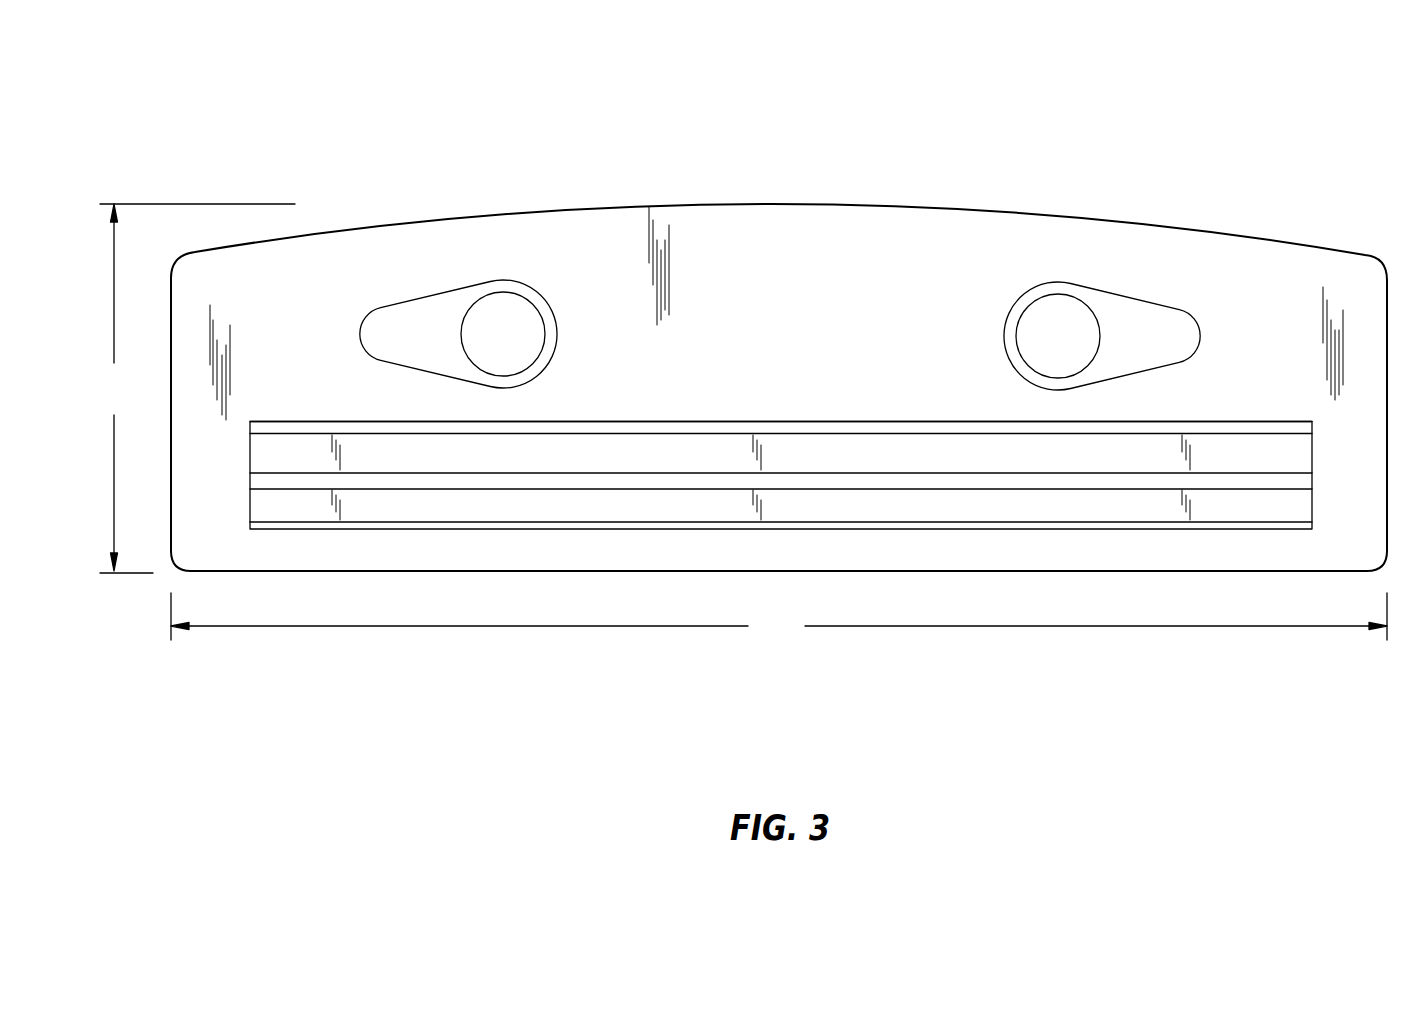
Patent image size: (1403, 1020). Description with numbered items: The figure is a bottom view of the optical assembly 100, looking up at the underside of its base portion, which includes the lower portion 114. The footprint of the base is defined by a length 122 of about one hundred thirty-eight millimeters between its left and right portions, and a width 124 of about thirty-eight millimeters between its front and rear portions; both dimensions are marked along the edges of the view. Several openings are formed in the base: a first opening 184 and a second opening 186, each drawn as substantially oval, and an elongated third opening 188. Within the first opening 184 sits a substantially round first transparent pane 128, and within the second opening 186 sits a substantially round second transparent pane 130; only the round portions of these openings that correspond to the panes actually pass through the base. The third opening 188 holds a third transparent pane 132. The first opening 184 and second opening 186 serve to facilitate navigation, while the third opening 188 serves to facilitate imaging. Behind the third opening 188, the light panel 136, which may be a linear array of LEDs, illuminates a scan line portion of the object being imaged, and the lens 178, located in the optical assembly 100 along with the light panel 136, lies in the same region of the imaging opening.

The optical assembly 100 is at (1118, 138).
The lower portion 114 is at (793, 328).
The length 122 is at (779, 618).
The width 124 is at (196, 388).
The first transparent pane 128 is at (527, 333).
The second transparent pane 130 is at (1035, 333).
The third transparent pane 132 is at (1312, 479).
The light panel 136 is at (1262, 507).
The lens 178 is at (1262, 443).
The first opening 184 is at (412, 302).
The second opening 186 is at (1148, 300).
The third opening 188 is at (877, 421).